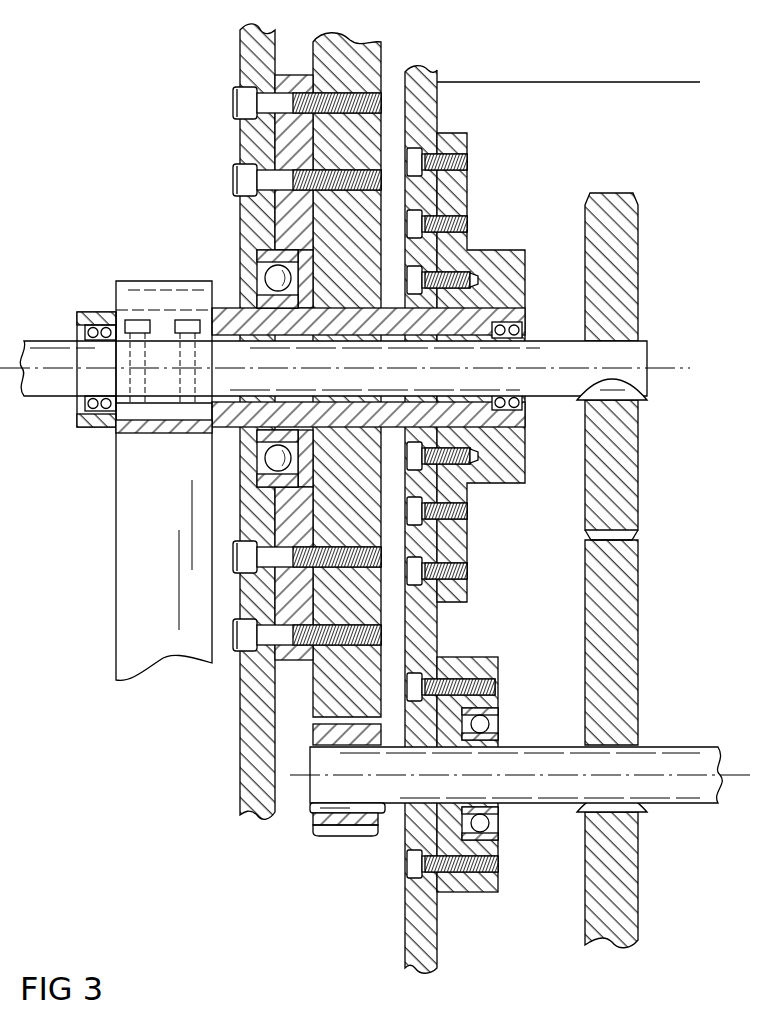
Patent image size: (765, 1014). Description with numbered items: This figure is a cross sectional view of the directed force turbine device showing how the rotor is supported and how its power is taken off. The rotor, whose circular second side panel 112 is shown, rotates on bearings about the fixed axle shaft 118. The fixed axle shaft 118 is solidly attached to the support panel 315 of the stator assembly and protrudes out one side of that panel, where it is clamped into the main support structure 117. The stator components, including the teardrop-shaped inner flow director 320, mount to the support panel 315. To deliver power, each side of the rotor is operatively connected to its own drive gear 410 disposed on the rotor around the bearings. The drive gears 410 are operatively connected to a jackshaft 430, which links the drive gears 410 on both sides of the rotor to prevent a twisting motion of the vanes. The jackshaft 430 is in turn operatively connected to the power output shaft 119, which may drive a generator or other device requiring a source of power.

The second side panel 112 is at (238, 750).
The main support structure 117 is at (137, 622).
The fixed axle shaft 118 is at (78, 312).
The power output shaft 119 is at (50, 391).
The support panel 315 is at (405, 925).
The inner flow director 320 is at (515, 83).
The drive gear 410 is at (313, 677).
The jackshaft 430 is at (675, 805).